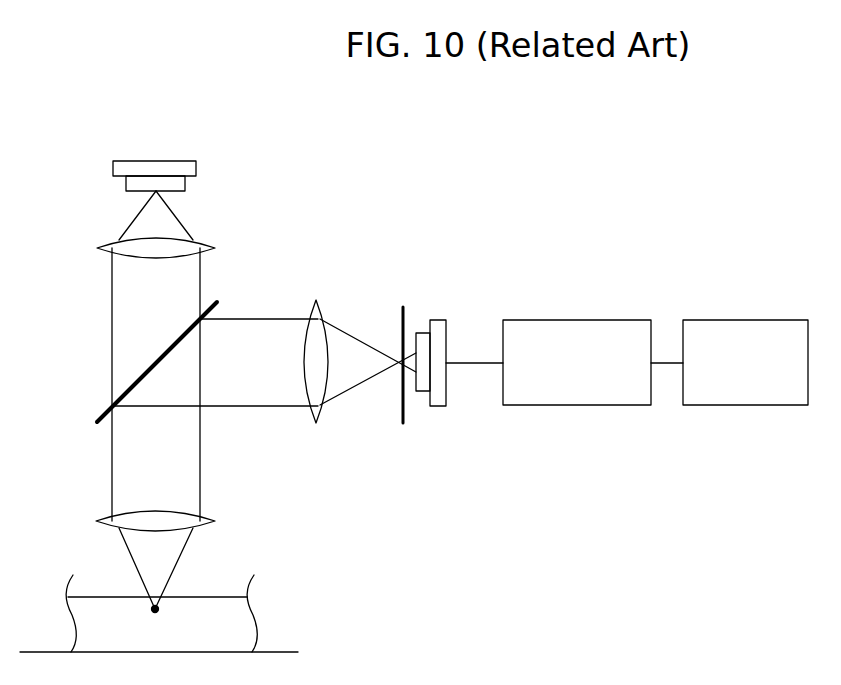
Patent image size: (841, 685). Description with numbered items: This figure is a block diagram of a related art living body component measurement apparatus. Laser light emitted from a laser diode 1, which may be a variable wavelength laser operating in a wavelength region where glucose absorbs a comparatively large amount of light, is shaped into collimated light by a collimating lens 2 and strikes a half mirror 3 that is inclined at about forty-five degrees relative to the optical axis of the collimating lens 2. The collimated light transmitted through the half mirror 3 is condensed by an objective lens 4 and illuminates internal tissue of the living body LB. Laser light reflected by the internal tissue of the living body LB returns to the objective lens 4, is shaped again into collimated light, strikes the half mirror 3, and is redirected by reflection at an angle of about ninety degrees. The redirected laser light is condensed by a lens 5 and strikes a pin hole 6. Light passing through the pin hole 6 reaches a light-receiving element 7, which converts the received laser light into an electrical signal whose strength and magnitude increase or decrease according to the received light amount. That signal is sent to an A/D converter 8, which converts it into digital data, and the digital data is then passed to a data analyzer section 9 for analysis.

The laser diode 1 is at (196, 168).
The collimating lens 2 is at (215, 248).
The half mirror 3 is at (217, 302).
The objective lens 4 is at (97, 521).
The lens 5 is at (316, 308).
The pin hole 6 is at (403, 300).
The light-receiving element 7 is at (438, 320).
The A/D converter 8 is at (597, 319).
The data analyzer section 9 is at (757, 319).
The living body LB is at (243, 622).